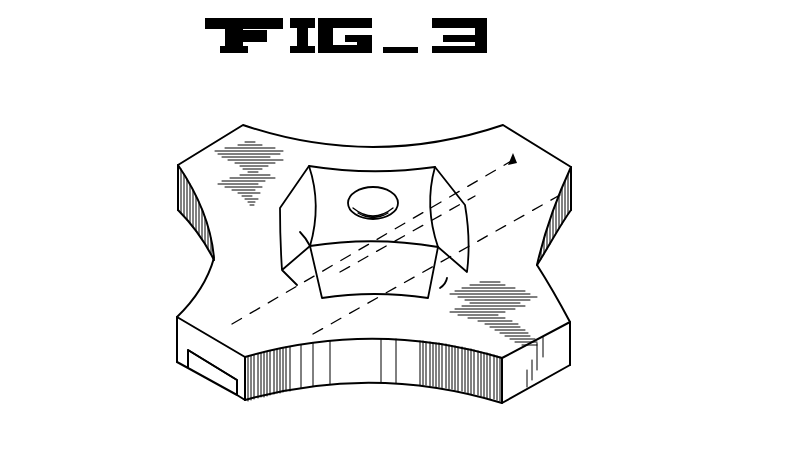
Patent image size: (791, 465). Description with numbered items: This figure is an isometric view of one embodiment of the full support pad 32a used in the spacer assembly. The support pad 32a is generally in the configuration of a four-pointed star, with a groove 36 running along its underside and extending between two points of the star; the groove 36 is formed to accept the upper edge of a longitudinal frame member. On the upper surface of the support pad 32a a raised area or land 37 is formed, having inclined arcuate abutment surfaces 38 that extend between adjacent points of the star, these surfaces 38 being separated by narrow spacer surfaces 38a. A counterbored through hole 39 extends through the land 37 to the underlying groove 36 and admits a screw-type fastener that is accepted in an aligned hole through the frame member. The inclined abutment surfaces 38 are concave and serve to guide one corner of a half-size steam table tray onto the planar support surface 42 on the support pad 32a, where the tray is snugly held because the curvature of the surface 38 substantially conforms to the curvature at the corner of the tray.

The support pad 32a is at (140, 241).
The groove 36 is at (220, 372).
The land 37 is at (322, 170).
The inclined arcuate abutment surfaces 38 is at (445, 190).
The spacer surfaces 38a is at (309, 246).
The counterbored through hole 39 is at (383, 193).
The planar support surface 42 is at (520, 277).